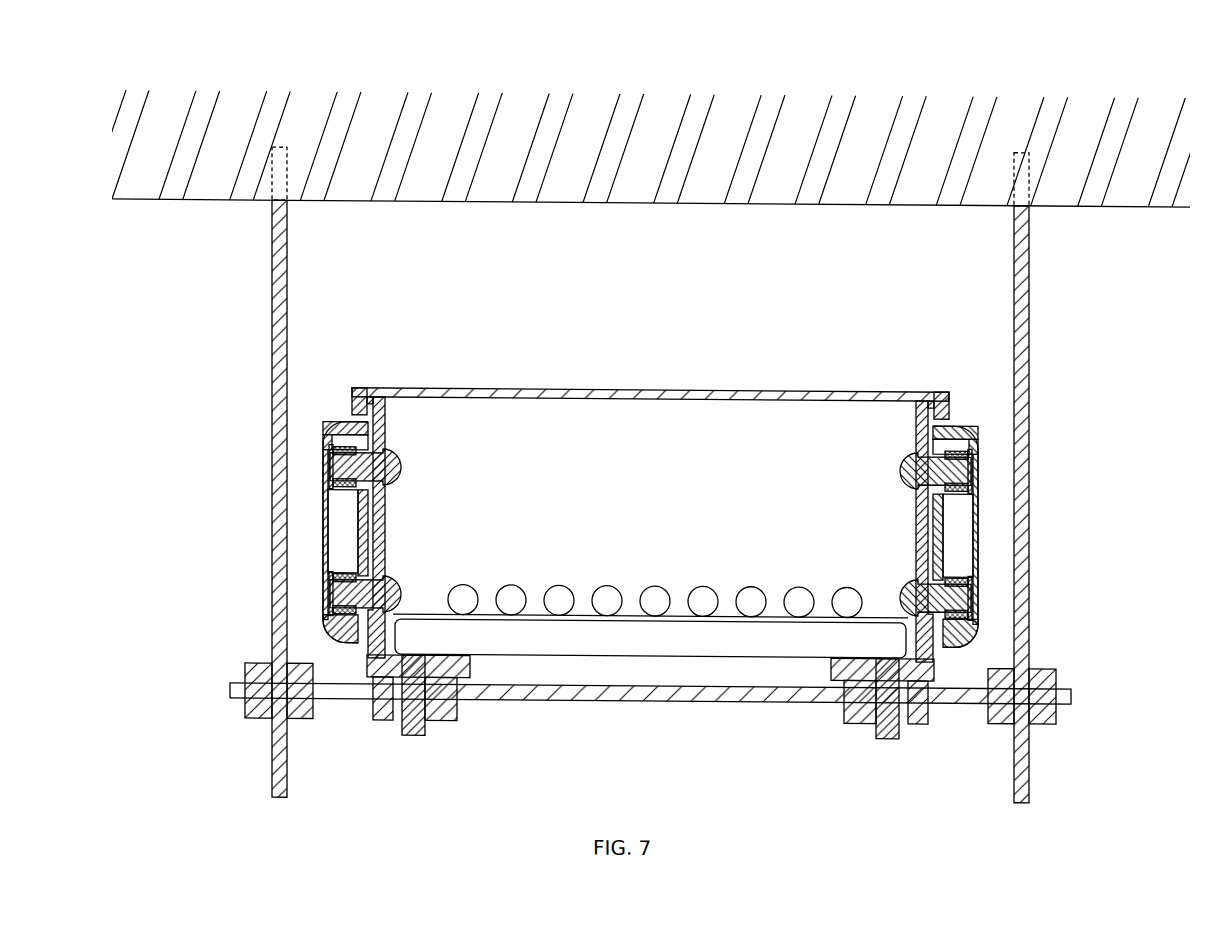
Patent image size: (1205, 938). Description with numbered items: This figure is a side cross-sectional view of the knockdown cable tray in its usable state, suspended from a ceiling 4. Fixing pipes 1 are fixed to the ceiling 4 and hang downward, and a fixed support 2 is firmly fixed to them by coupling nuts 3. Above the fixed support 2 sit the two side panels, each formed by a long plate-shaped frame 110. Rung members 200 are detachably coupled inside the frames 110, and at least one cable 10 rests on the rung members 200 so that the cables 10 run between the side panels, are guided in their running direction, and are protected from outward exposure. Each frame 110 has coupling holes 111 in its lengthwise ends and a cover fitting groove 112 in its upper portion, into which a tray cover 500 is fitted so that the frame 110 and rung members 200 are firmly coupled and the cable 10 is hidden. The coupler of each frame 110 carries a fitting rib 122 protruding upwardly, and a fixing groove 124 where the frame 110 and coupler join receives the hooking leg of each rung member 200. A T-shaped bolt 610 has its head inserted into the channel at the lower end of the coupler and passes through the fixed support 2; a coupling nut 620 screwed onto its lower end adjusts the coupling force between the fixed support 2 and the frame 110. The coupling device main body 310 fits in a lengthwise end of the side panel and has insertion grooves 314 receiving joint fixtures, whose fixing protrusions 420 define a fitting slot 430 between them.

The fixing pipe 1 is at (278, 736).
The fixed support 2 is at (230, 695).
The coupling nut 3 is at (252, 676).
The ceiling 4 is at (458, 125).
The cable 10 is at (610, 603).
The frame 110 is at (373, 434).
The coupling hole 111 is at (330, 590).
The cover fitting groove 112 is at (352, 410).
The fitting rib 122 is at (330, 619).
The fixing groove 124 is at (343, 644).
The rung member 200 is at (677, 621).
The main body 310 is at (323, 502).
The insertion groove 314 is at (345, 572).
The fixing protrusion 420 is at (330, 477).
The fitting slot 430 is at (333, 457).
The tray cover 500 is at (397, 394).
The T-shaped bolt 610 is at (887, 730).
The coupling nut 620 is at (913, 722).